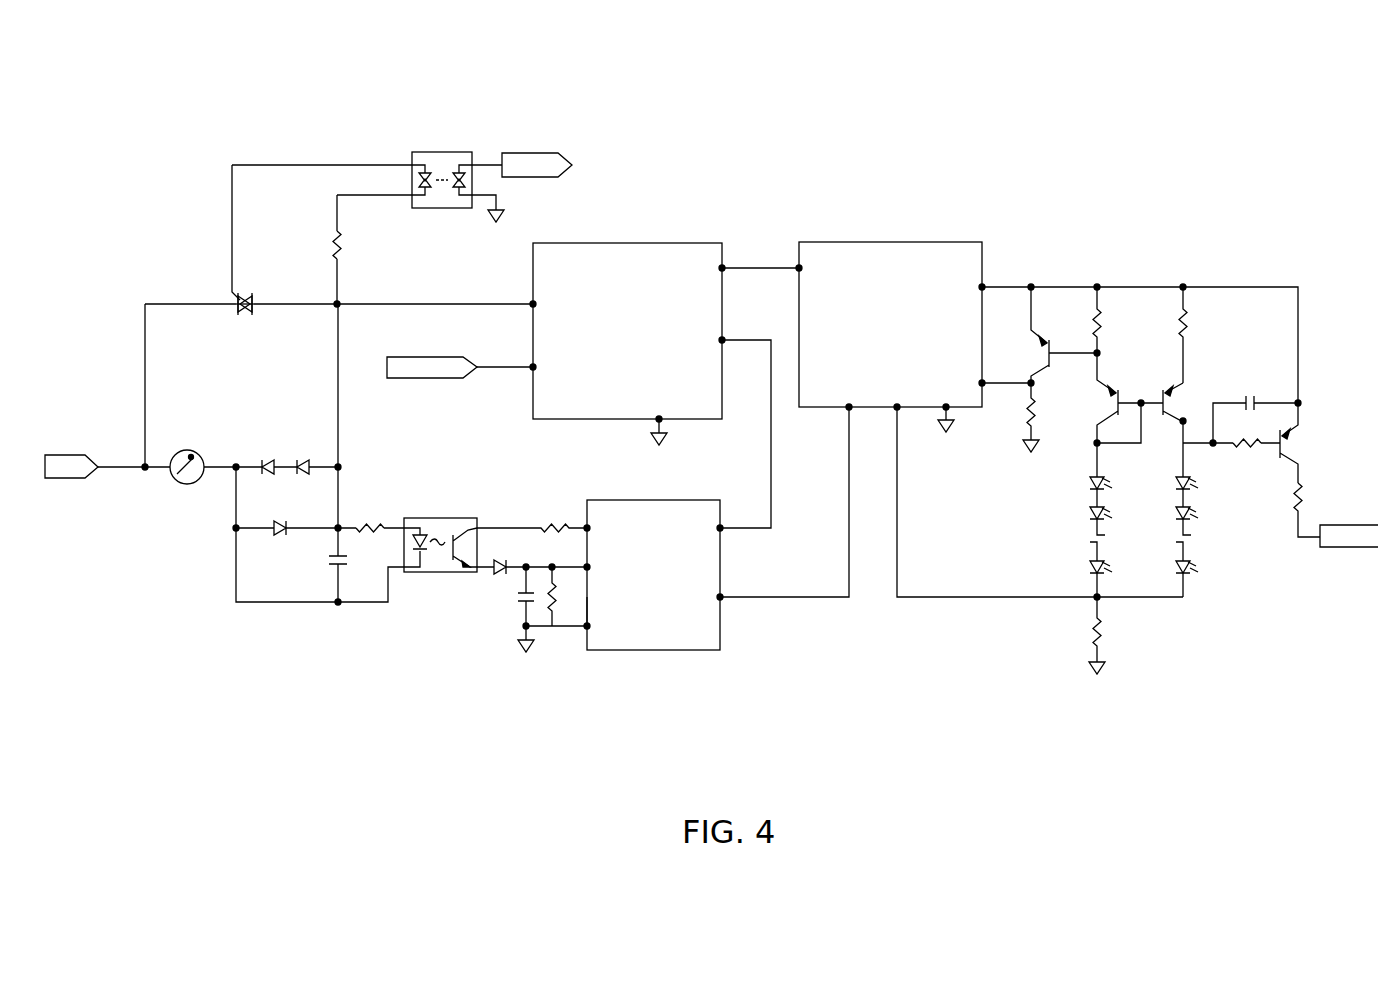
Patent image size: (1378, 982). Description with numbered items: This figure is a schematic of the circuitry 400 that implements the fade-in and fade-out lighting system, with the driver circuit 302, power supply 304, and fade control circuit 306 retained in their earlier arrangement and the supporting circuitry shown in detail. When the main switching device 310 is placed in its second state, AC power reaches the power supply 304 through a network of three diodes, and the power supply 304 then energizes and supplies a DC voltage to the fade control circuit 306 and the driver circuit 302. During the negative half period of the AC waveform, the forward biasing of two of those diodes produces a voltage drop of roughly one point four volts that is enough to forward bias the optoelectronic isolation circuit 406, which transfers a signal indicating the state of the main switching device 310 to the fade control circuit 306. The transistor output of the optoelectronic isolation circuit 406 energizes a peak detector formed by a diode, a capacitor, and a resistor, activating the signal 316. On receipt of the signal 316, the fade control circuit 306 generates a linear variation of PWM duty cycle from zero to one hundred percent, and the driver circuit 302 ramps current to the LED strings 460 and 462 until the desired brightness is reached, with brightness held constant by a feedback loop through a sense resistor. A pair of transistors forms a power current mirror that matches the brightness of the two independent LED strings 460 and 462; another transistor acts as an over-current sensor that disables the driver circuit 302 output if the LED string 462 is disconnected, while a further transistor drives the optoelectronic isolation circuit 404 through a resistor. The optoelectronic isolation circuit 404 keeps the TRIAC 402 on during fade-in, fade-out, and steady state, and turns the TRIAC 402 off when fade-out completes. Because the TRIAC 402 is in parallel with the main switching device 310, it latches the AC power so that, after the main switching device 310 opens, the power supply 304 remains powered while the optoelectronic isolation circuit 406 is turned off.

The circuitry 400 is at (1040, 140).
The TRIAC 402 is at (222, 262).
The optoelectronic isolation circuit 404 is at (441, 150).
The optoelectronic isolation circuit 406 is at (442, 517).
The driver circuit 302 is at (925, 242).
The power supply 304 is at (545, 420).
The fade control circuit 306 is at (700, 498).
The main switching device 310 is at (187, 485).
The signal 316 is at (573, 546).
The LED string 460 is at (1056, 519).
The LED string 462 is at (1238, 571).